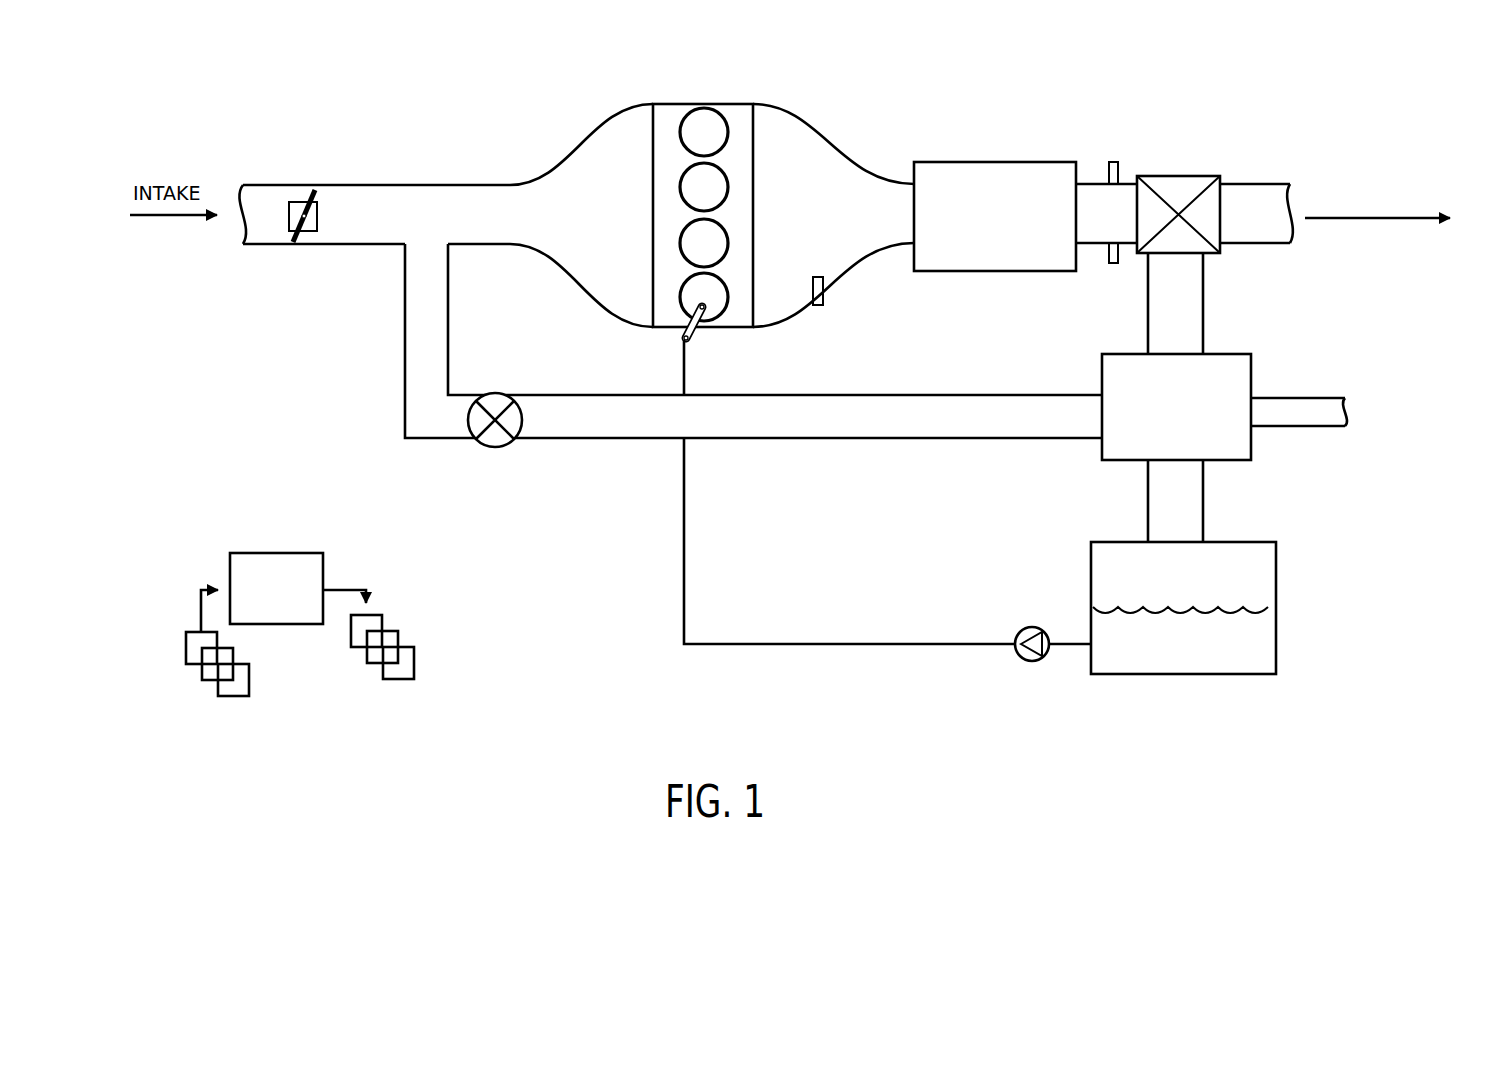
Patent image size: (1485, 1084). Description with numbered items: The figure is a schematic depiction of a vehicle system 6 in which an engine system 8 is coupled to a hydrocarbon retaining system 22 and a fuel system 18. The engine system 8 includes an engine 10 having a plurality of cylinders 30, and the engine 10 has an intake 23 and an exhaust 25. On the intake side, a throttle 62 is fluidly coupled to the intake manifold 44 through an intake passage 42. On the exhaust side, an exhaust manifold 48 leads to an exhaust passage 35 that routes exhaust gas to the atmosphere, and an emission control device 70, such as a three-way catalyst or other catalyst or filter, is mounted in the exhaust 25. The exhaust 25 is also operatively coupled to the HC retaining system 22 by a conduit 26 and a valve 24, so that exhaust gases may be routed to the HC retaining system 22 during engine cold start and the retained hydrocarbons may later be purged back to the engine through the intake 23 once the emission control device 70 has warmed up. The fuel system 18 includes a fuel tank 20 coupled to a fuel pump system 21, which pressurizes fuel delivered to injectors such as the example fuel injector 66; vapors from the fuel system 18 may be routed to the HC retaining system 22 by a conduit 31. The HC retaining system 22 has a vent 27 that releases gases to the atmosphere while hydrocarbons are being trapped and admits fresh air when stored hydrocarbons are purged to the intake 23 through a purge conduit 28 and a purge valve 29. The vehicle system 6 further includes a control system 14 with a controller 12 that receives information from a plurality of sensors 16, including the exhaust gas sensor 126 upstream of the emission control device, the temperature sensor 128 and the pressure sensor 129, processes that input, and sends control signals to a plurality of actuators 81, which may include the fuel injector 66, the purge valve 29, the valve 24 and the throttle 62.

The vehicle system 6 is at (324, 103).
The engine system 8 is at (882, 68).
The engine 10 is at (755, 197).
The controller 12 is at (276, 588).
The control system 14 is at (442, 538).
The sensors 16 is at (256, 700).
The fuel system 18 is at (1192, 720).
The fuel tank 20 is at (1276, 651).
The fuel pump system 21 is at (1030, 628).
The hydrocarbon retaining system 22 is at (1252, 386).
The intake 23 is at (453, 167).
The valve 24 is at (1168, 176).
The exhaust 25 is at (1120, 125).
The conduit 26 is at (1175, 303).
The vent 27 is at (1299, 412).
The purge conduit 28 is at (753, 444).
The purge valve 29 is at (495, 393).
The cylinders 30 is at (726, 125).
The conduit 31 is at (1175, 501).
The exhaust passage 35 is at (1127, 184).
The intake passage 42 is at (355, 246).
The intake manifold 44 is at (586, 215).
The exhaust manifold 48 is at (833, 215).
The throttle 62 is at (318, 227).
The fuel injector 66 is at (700, 328).
The emission control device 70 is at (975, 163).
The actuators 81 is at (424, 680).
The exhaust gas sensor 126 is at (823, 286).
The temperature sensor 128 is at (1109, 253).
The pressure sensor 129 is at (1109, 173).